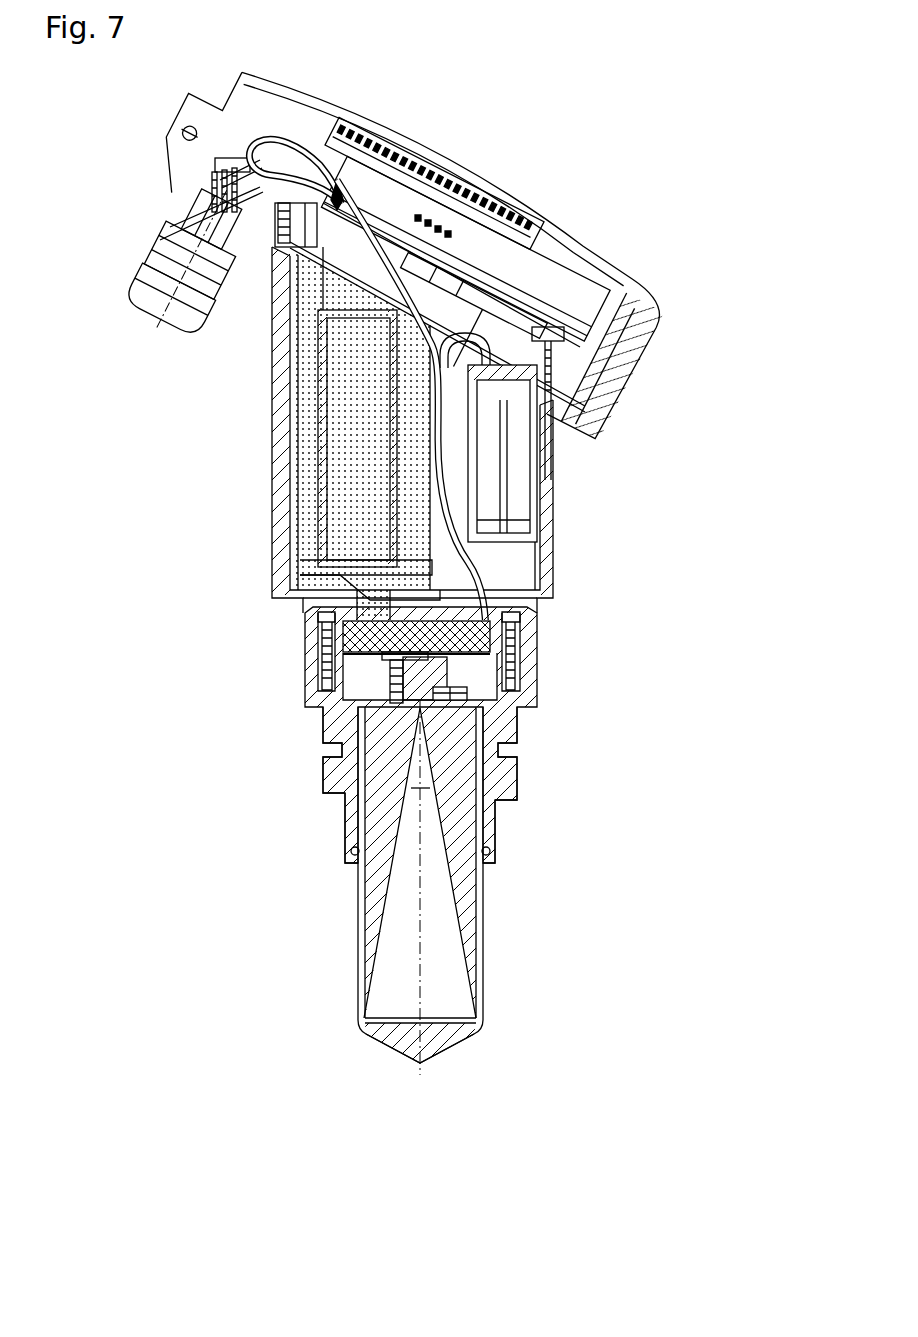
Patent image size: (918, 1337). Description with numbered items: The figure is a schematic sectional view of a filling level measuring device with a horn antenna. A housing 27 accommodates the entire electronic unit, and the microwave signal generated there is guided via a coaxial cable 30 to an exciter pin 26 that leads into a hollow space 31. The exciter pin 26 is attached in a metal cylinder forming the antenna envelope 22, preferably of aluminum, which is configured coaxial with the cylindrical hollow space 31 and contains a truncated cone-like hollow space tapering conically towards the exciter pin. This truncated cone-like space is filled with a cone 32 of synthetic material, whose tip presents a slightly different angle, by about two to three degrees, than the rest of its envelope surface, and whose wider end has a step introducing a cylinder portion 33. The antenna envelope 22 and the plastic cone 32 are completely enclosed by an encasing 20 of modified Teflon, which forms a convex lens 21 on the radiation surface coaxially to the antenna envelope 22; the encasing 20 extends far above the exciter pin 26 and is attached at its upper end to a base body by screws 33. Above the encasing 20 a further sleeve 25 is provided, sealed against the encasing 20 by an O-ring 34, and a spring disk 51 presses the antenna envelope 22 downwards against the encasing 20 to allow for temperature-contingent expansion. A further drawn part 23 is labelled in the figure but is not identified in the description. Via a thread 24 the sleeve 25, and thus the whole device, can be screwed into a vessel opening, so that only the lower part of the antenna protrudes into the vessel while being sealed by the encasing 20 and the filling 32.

The encasing 20 is at (377, 1035).
The convex lens 21 is at (402, 1062).
The antenna envelope 22 is at (467, 932).
The probe sheath 23 is at (372, 940).
The thread 24 is at (495, 838).
The sleeve 25 is at (500, 782).
The exciter pin 26 is at (445, 710).
The housing 27 is at (250, 449).
The coaxial cable 30 is at (485, 585).
The hollow space 31 is at (412, 708).
The cone 32 is at (448, 983).
The cylinder portion 33 is at (300, 600).
The O-ring 34 is at (352, 848).
The spring disk 51 is at (380, 703).